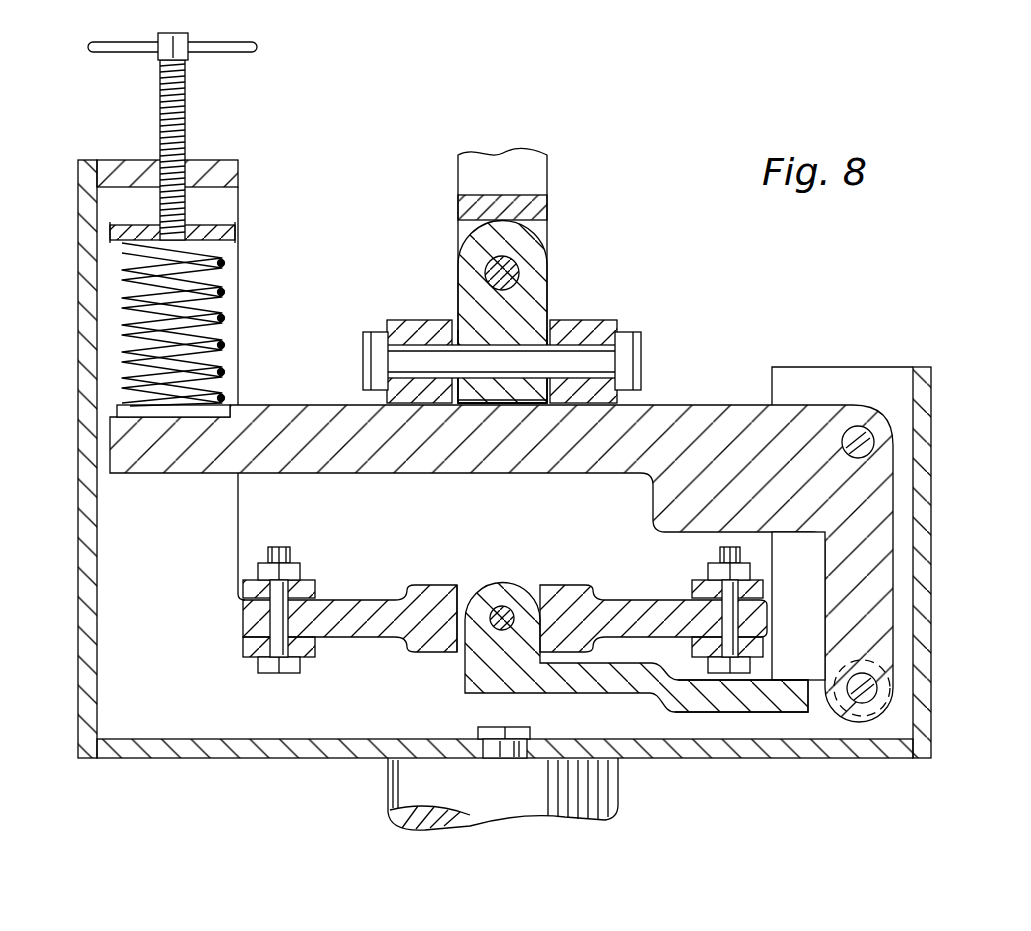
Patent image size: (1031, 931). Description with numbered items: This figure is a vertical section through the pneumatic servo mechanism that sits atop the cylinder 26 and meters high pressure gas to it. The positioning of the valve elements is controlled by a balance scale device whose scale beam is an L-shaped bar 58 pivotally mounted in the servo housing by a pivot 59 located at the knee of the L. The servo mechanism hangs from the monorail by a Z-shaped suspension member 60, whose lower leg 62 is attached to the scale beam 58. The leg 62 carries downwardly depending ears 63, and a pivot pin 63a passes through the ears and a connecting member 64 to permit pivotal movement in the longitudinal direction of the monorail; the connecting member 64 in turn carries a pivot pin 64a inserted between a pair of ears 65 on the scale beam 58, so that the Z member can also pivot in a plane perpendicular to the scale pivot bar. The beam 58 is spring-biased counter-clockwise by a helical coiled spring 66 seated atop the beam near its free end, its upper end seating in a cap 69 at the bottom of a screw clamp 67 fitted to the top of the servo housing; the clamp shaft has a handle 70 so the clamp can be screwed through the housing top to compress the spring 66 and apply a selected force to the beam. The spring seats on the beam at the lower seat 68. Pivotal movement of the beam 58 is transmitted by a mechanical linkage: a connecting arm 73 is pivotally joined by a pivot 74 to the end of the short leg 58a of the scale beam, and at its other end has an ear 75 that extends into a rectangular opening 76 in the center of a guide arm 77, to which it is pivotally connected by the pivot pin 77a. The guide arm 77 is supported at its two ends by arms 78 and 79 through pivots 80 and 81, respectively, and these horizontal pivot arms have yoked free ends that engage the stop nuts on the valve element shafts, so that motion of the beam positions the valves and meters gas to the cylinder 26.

The handle 70 is at (250, 50).
The screw clamp 67 is at (192, 118).
The cap 69 is at (236, 237).
The helical coiled spring 66 is at (225, 291).
The scale beam 58 is at (318, 398).
The lower spring seat 68 is at (215, 415).
The Z-shaped suspension member 60 is at (452, 170).
The lower leg 62 is at (458, 206).
The ears 63 is at (470, 231).
The connecting member 64 is at (465, 285).
The pivot pin 63a is at (512, 270).
The ears 65 is at (405, 320).
The pivot pin 64a is at (605, 356).
The pivot 59 is at (874, 441).
The short leg 58a is at (893, 558).
The pivot 74 is at (878, 689).
The connecting arm 73 is at (750, 700).
The cylinder 26 is at (388, 785).
The guide arm 77 is at (364, 592).
The rectangular opening 76 is at (462, 588).
The ear 75 is at (510, 592).
The pivot pin 77a is at (508, 612).
The arm 78 is at (243, 590).
The pivot 80 is at (272, 612).
The arm 79 is at (692, 590).
The pivot 81 is at (735, 618).